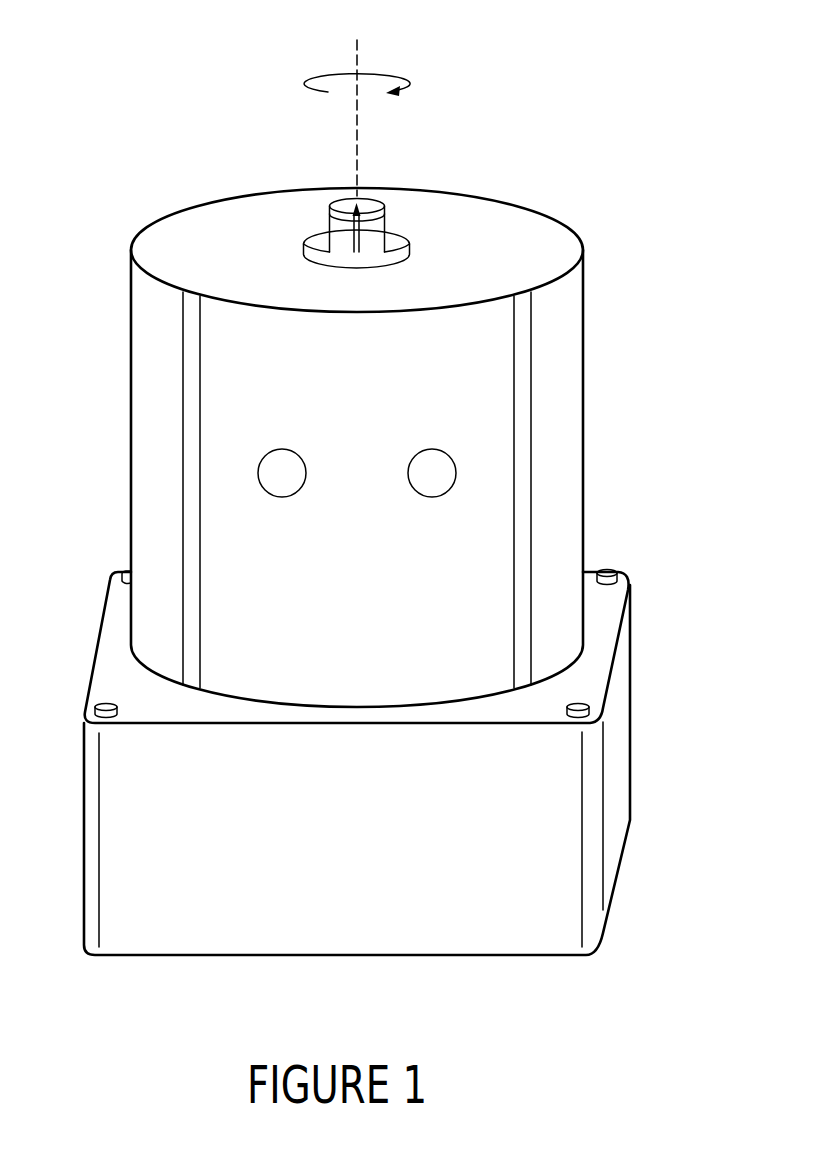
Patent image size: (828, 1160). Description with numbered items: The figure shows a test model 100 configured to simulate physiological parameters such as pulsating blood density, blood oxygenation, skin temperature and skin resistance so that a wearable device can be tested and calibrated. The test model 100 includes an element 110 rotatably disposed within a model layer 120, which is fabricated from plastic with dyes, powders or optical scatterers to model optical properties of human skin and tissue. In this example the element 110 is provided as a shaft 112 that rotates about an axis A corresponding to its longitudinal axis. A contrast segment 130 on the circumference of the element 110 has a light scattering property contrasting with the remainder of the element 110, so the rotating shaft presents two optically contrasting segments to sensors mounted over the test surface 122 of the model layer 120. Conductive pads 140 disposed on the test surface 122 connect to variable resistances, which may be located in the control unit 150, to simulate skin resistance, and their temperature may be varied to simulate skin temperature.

The test model 100 is at (582, 173).
The element 110 is at (348, 182).
The shaft 112 is at (367, 199).
The model layer 120 is at (555, 402).
The test surface 122 is at (333, 422).
The contrast segment 130 is at (320, 237).
The conductive pads 140 is at (272, 478).
The control unit 150 is at (613, 777).